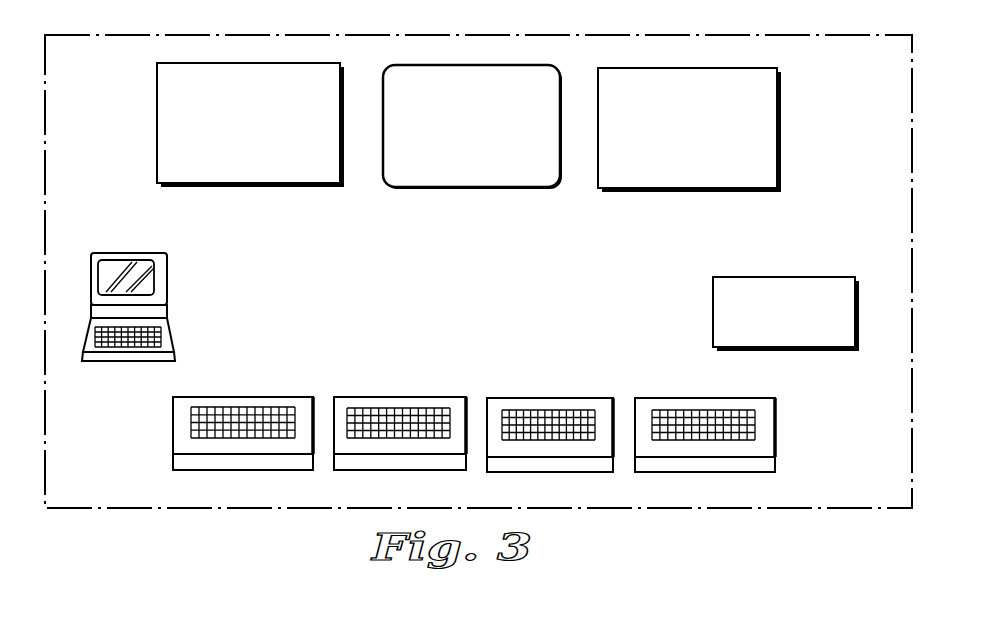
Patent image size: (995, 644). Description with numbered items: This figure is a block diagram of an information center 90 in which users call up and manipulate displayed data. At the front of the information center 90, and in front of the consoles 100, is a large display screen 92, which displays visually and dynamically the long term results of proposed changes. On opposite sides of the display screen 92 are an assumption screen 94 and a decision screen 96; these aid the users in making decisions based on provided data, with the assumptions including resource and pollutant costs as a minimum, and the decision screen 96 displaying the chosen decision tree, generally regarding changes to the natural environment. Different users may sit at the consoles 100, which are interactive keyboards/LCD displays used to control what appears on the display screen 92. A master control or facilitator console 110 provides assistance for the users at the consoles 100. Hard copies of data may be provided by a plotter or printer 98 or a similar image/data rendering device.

The information center 90 is at (871, 14).
The display screen 92 is at (522, 45).
The assumption screen 94 is at (278, 63).
The decision screen 96 is at (738, 50).
The printer 98 is at (815, 277).
The consoles 100 is at (357, 397).
The facilitator console 110 is at (167, 280).